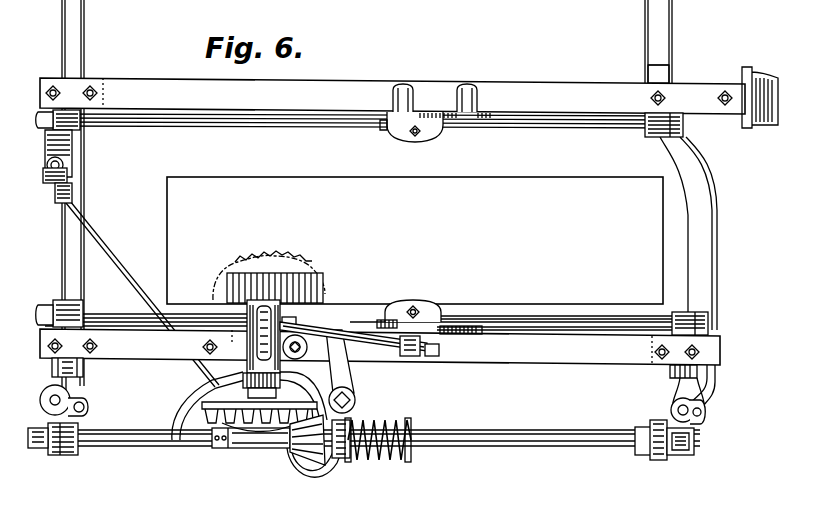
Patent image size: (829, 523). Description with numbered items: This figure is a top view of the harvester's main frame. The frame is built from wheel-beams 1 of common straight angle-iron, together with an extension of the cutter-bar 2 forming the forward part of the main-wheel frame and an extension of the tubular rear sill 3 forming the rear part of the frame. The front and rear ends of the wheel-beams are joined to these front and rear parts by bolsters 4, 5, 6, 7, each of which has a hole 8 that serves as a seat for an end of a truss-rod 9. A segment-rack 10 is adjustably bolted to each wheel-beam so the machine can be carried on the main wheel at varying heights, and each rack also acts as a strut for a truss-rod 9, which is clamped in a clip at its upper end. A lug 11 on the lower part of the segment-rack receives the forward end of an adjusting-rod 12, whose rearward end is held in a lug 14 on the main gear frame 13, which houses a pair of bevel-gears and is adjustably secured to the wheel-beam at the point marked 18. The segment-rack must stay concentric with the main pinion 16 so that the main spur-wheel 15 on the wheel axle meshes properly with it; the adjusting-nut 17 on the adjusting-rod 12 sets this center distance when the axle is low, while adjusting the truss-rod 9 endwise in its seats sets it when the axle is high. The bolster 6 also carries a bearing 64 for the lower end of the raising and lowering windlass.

The wheel-beams 1 is at (409, 216).
The extension of the cutter-bar 2 is at (681, 210).
The extension of the tubular rear sill 3 is at (76, 195).
The bolster 4 is at (52, 367).
The bolster 5 is at (675, 384).
The bolster 6 is at (56, 153).
The bolster 7 is at (640, 79).
The holes 8 is at (38, 120).
The truss-rods 9 is at (306, 128).
The segment-rack 10 is at (478, 108).
The lug 11 is at (404, 355).
The adjusting-rod 12 is at (357, 337).
The main gear frame 13 is at (250, 336).
The lug 14 is at (295, 327).
The main spur-wheel 15 is at (322, 293).
The main pinion 16 is at (218, 293).
The adjusting-nut 17 is at (432, 357).
The adjustable securing point 18 is at (300, 357).
The bearing 64 is at (46, 176).